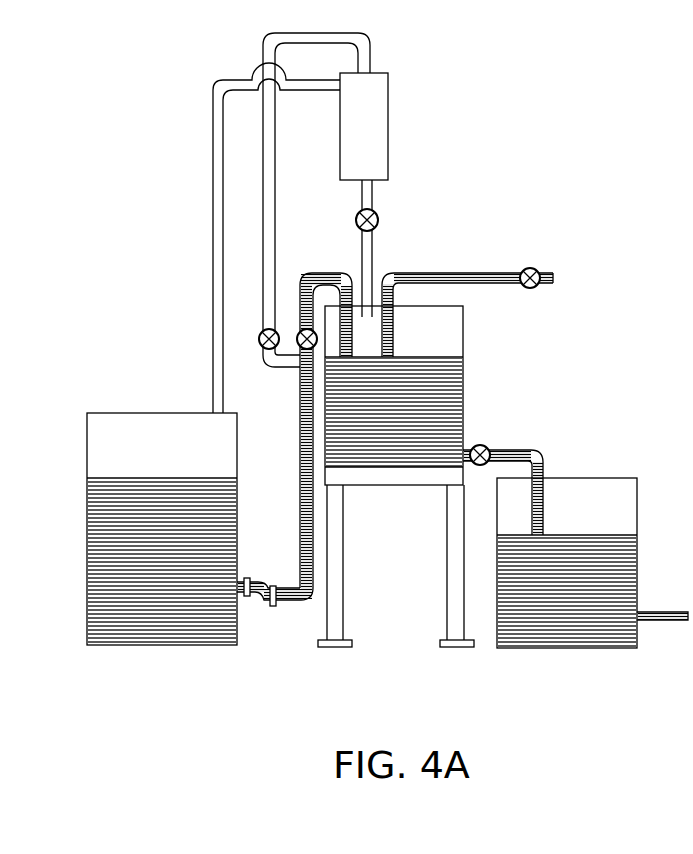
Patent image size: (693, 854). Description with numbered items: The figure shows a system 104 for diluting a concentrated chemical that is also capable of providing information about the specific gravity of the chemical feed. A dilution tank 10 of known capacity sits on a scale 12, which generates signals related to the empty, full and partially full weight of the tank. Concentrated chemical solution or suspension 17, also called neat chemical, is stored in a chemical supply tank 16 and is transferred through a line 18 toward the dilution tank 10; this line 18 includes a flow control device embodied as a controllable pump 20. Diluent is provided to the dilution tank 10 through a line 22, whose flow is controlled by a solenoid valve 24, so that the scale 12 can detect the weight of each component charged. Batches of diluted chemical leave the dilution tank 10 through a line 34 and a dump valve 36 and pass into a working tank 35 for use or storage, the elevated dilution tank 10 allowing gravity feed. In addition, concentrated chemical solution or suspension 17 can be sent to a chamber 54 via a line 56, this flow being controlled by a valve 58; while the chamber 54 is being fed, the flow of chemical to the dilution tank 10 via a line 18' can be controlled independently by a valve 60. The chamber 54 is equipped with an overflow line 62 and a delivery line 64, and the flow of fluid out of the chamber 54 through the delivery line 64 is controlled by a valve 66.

The dilution tank 10 is at (464, 392).
The scale 12 is at (437, 478).
The chemical supply tank 16 is at (165, 413).
The concentrated chemical solution or suspension 17 is at (155, 633).
The line 18 is at (289, 431).
The line 18' is at (317, 294).
The controllable pump 20 is at (262, 600).
The line 22 is at (490, 272).
The solenoid valve 24 is at (535, 290).
The line 34 is at (547, 463).
The working tank 35 is at (618, 525).
The dump valve 36 is at (487, 447).
The chamber 54 is at (390, 90).
The line 56 is at (263, 213).
The valve 58 is at (259, 339).
The valve 60 is at (299, 333).
The overflow line 62 is at (213, 102).
The delivery line 64 is at (373, 200).
The valve 66 is at (378, 222).
The system 104 is at (238, 692).